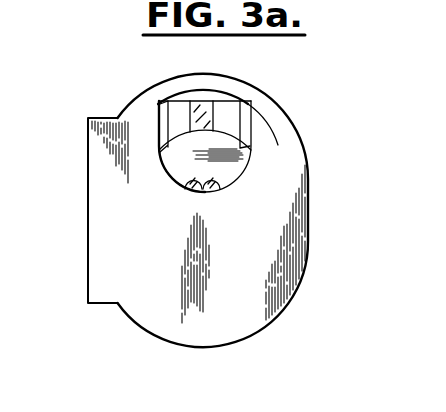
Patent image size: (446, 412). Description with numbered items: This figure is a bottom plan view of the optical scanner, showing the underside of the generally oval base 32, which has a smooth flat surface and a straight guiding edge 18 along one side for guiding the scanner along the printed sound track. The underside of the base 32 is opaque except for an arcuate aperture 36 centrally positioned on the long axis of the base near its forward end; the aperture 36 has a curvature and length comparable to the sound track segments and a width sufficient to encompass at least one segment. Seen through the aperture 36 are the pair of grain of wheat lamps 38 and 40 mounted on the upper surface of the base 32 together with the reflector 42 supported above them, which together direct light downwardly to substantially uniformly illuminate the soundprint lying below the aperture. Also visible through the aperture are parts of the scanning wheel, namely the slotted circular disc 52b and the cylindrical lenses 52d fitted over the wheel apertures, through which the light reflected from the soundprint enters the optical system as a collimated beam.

The straight guiding edge 18 is at (88, 226).
The generally oval base 32 is at (266, 294).
The aperture 36 is at (246, 127).
The grain of wheat lamp 38 is at (193, 184).
The grain of wheat lamp 40 is at (215, 186).
The reflector 42 is at (184, 164).
The circular disc 52b is at (176, 121).
The cylindrical lens 52d is at (212, 104).